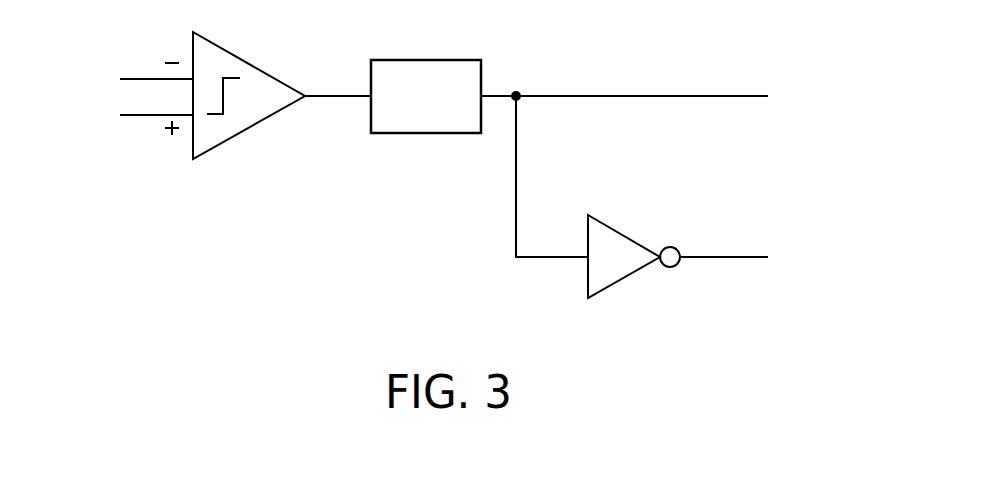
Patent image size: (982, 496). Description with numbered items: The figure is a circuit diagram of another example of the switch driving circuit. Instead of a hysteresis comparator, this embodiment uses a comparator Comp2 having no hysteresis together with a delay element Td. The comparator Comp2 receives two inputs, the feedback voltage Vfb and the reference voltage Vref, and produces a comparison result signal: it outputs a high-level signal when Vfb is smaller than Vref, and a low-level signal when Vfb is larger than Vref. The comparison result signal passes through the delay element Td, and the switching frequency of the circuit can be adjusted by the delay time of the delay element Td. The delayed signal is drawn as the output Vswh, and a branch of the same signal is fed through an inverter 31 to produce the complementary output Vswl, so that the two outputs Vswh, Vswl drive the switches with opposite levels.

The inverter 31 is at (625, 233).
The comparator Comp2 is at (235, 110).
The delay element Td is at (393, 96).
The feedback voltage Vfb is at (127, 78).
The reference voltage Vref is at (127, 114).
The high-side switching signal Vswh is at (659, 97).
The low-side switching signal Vswl is at (758, 259).